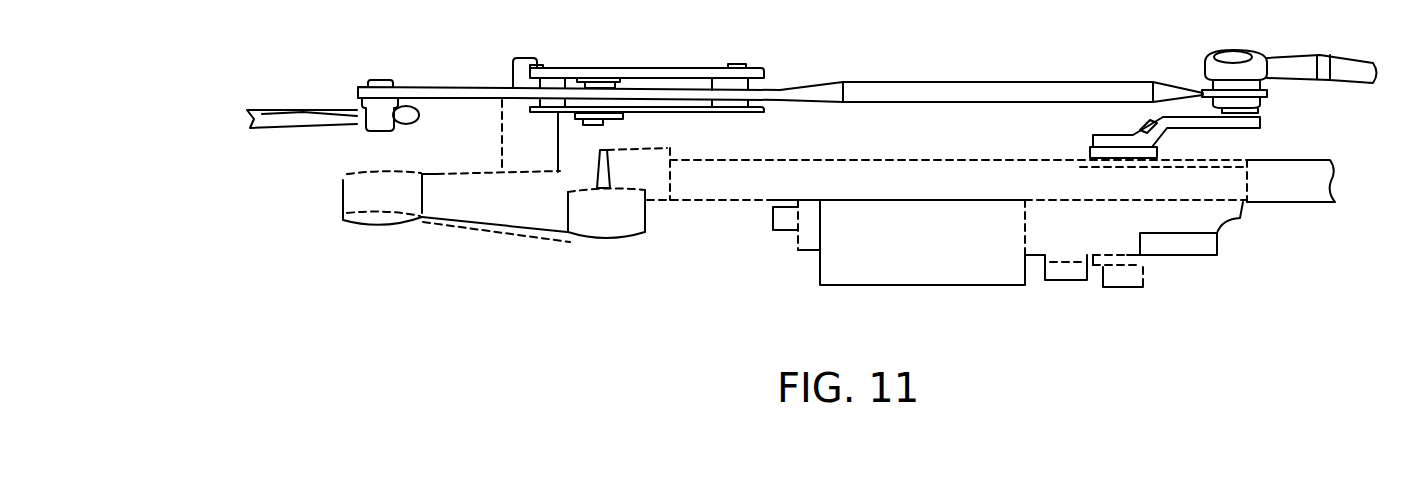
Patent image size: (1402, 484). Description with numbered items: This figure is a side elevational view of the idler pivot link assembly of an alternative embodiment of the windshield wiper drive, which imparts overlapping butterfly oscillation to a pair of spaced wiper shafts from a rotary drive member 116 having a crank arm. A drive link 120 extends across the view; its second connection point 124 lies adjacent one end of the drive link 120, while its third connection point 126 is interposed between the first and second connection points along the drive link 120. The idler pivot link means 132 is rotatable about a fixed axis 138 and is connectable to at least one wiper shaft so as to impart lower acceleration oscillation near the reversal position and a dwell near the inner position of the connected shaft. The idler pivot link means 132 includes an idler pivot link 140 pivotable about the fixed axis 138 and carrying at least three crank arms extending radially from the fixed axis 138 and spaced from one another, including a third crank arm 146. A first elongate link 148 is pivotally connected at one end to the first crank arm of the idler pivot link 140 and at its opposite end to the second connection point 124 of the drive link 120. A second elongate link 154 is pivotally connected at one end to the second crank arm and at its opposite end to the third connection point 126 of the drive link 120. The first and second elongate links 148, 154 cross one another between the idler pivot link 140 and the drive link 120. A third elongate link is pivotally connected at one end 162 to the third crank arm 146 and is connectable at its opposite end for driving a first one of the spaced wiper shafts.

The rotary drive member 116 is at (1007, 286).
The drive link 120 is at (1000, 57).
The second connection point 124 is at (593, 123).
The third connection point 126 is at (747, 113).
The idler pivot link means 132 is at (502, 56).
The fixed axis 138 is at (507, 88).
The idler pivot link 140 is at (495, 62).
The third crank arm 146 is at (403, 87).
The first elongate link 148 is at (624, 83).
The second elongate link 154 is at (692, 67).
The one end of third elongate link 162 is at (281, 121).